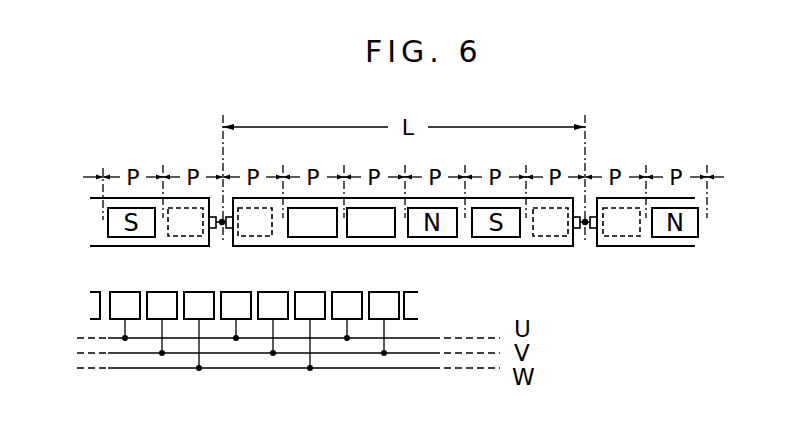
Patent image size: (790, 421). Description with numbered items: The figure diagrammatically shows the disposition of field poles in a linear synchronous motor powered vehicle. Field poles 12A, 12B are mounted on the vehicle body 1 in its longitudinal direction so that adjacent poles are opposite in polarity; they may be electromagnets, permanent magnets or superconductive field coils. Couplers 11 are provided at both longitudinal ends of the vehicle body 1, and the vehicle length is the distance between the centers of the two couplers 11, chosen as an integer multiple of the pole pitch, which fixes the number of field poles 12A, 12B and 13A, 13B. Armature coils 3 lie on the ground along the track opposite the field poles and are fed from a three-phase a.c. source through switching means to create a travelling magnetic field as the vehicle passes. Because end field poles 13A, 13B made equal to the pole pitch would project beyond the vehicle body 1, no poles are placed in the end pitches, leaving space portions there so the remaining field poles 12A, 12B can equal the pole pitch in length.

The vehicle body 1 is at (563, 245).
The armature coils 3 is at (127, 292).
The couplers 11 is at (586, 228).
The field pole 12A is at (312, 237).
The field pole 12B is at (375, 237).
The end field pole 13A is at (185, 237).
The end field pole 13B is at (240, 237).